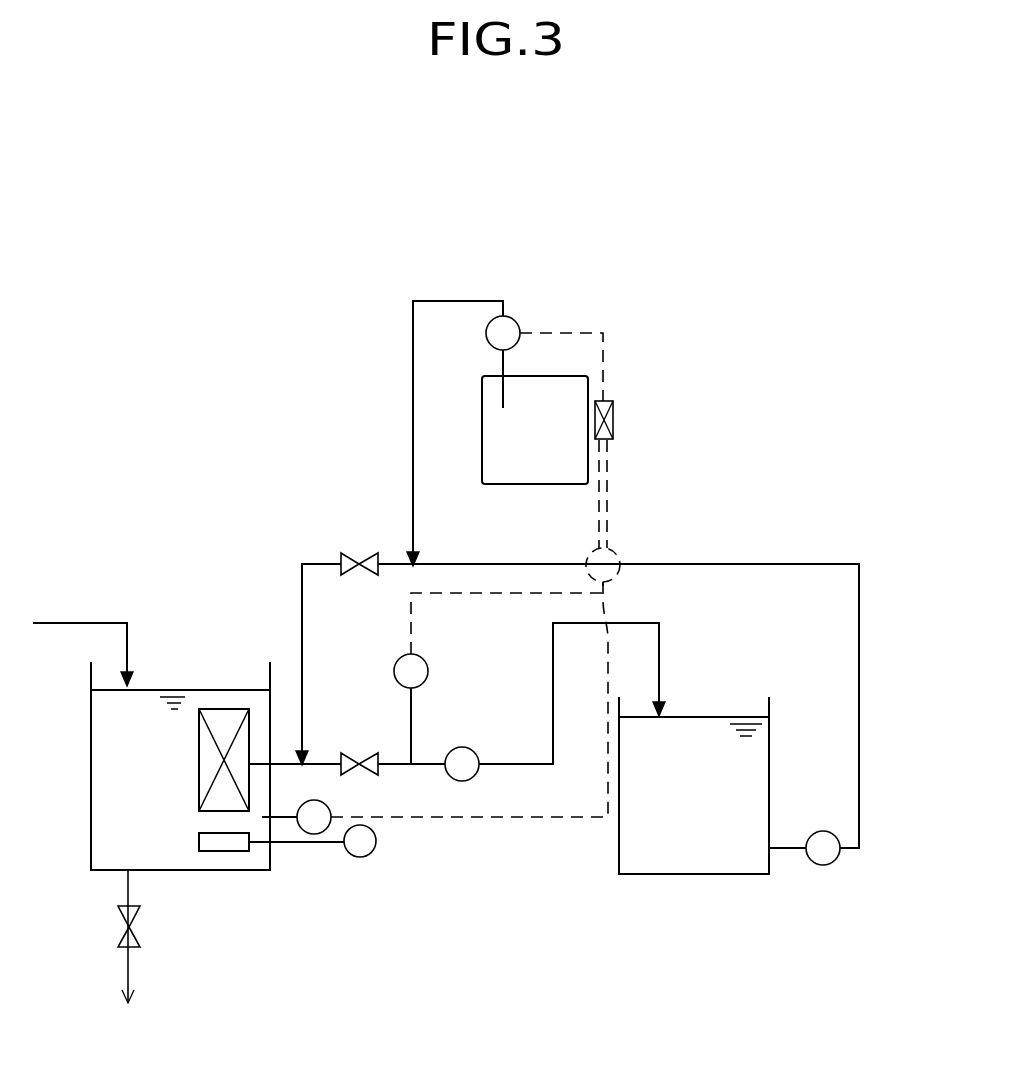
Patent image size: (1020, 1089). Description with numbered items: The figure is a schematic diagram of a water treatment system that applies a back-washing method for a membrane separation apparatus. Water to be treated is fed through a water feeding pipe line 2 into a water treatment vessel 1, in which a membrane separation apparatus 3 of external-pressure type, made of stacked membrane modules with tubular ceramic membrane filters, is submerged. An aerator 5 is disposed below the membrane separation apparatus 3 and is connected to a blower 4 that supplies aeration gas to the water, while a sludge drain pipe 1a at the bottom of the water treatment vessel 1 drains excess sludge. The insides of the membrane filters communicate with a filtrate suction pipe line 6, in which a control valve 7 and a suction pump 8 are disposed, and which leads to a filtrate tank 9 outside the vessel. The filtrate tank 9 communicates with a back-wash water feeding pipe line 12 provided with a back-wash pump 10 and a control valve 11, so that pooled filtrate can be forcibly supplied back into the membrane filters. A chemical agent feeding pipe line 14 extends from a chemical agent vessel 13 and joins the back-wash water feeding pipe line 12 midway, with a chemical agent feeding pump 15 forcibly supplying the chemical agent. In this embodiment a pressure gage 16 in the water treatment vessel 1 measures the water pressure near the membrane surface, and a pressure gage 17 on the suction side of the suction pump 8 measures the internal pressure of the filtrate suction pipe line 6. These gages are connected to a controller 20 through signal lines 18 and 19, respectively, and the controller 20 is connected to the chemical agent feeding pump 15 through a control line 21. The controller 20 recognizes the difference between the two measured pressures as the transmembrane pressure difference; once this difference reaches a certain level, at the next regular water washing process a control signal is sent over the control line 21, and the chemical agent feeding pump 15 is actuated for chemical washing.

The water treatment vessel 1 is at (91, 805).
The sludge drain pipe 1a is at (128, 956).
The water feeding pipe line 2 is at (92, 623).
The membrane separation apparatus 3 is at (226, 709).
The blower 4 is at (365, 858).
The aerator 5 is at (220, 851).
The filtrate suction pipe line 6 is at (425, 767).
The control valve 7 is at (355, 752).
The suction pump 8 is at (462, 747).
The filtrate tank 9 is at (640, 875).
The back-wash pump 10 is at (820, 866).
The control valve 11 is at (355, 553).
The back-wash water feeding pipe line 12 is at (860, 690).
The chemical agent vessel 13 is at (536, 484).
The chemical agent feeding pipe line 14 is at (413, 385).
The chemical agent feeding pump 15 is at (510, 318).
The pressure gage 16 is at (328, 810).
The pressure gage 17 is at (425, 660).
The signal line 18 is at (612, 492).
The signal line 19 is at (600, 548).
The controller 20 is at (613, 418).
The control line 21 is at (603, 345).